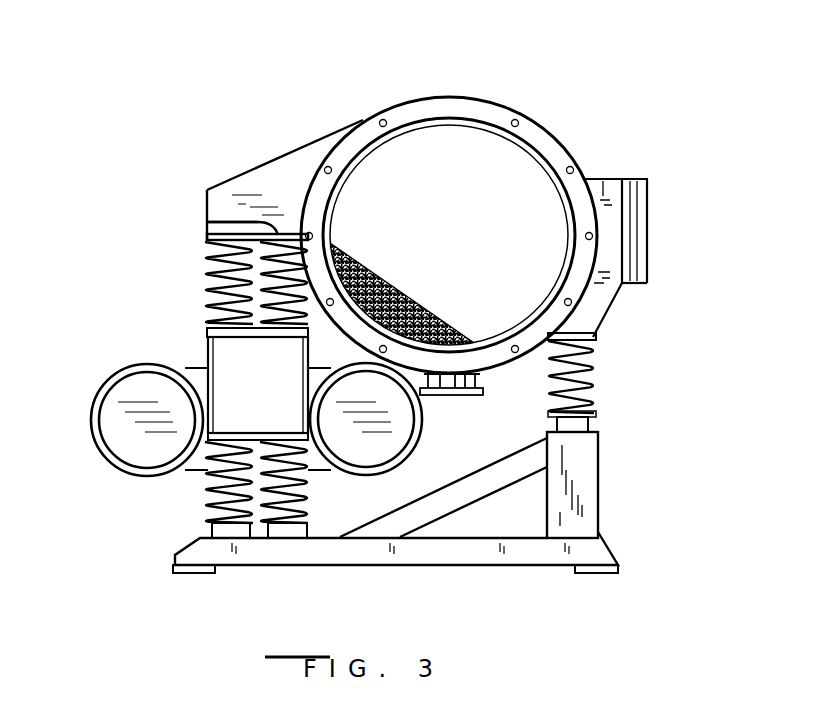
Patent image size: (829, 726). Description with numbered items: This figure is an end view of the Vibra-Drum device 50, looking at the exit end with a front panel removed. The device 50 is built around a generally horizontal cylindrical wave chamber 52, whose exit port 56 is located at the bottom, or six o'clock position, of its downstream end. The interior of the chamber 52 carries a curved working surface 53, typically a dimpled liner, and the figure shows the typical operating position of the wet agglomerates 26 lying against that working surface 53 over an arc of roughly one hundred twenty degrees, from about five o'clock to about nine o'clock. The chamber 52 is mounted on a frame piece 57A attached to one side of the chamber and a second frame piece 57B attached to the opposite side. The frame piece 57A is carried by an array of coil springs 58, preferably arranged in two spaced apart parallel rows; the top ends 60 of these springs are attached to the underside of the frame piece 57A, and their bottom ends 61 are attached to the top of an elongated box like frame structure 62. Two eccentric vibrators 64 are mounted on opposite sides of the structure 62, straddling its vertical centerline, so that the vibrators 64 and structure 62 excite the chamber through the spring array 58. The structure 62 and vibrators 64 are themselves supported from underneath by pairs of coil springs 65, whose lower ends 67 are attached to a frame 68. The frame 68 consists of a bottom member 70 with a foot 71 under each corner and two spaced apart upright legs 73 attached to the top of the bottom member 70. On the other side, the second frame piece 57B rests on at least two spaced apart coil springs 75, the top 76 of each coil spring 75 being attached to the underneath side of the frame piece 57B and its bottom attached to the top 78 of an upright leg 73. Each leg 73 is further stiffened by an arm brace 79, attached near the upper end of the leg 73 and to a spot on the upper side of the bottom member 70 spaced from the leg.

The Vibra-Drum device 50 is at (262, 168).
The cylindrical wave chamber 52 is at (456, 113).
The wet agglomerates 26 is at (410, 267).
The working surface 53 is at (372, 246).
The frame piece 57A is at (228, 206).
The second frame piece 57B is at (603, 195).
The top ends of coil springs 60 is at (258, 240).
The array of coil springs 58 is at (210, 318).
The bottom ends of coil springs 61 is at (276, 333).
The elongated box like frame structure 62 is at (275, 398).
The eccentric vibrators 64 is at (127, 447).
The exit port 56 is at (446, 409).
The pairs of coil springs 65 is at (207, 490).
The lower ends of coil springs 67 is at (230, 532).
The bottom member 70 is at (508, 565).
The foot 71 is at (188, 573).
The arm braces 79 is at (467, 493).
The frame 68 is at (598, 519).
The upright legs 73 is at (580, 463).
The top of upright leg 78 is at (575, 425).
The coil springs 75 is at (598, 382).
The top of coil spring 76 is at (598, 337).